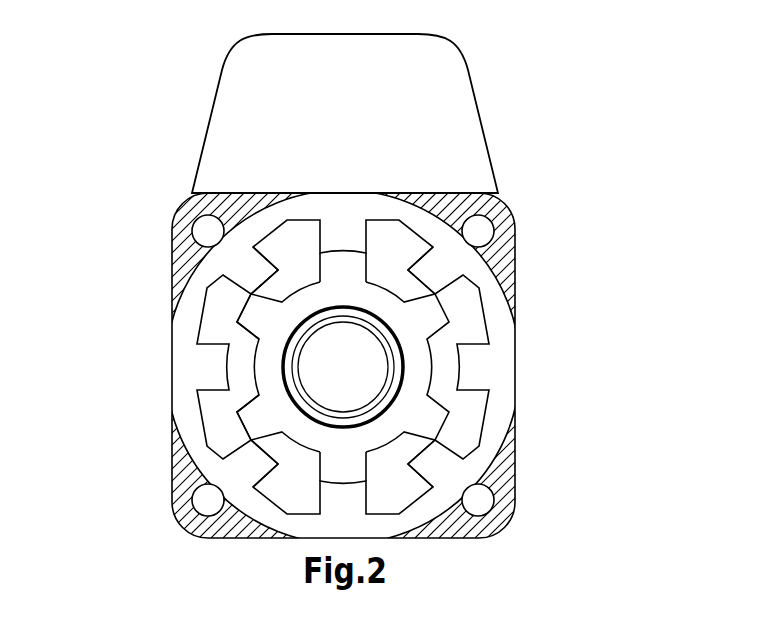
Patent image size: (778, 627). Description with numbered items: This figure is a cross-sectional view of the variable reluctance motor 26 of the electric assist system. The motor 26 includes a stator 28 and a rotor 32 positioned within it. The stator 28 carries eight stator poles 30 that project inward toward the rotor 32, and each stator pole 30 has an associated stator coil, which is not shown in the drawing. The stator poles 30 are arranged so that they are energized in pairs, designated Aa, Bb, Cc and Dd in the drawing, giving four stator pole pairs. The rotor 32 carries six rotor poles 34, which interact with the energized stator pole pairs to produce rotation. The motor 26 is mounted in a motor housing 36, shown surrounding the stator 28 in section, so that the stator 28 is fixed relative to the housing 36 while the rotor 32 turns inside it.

The variable reluctance motor 26 is at (521, 318).
The stator 28 is at (207, 288).
The stator poles 30 is at (370, 238).
The rotor 32 is at (429, 343).
The rotor poles 34 is at (237, 321).
The motor housing 36 is at (516, 236).